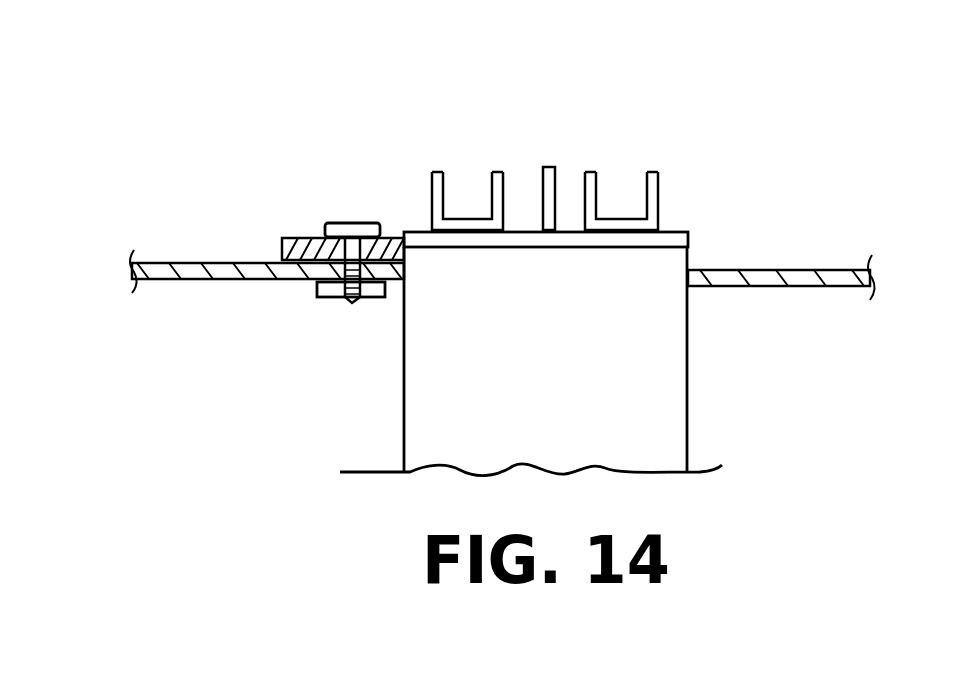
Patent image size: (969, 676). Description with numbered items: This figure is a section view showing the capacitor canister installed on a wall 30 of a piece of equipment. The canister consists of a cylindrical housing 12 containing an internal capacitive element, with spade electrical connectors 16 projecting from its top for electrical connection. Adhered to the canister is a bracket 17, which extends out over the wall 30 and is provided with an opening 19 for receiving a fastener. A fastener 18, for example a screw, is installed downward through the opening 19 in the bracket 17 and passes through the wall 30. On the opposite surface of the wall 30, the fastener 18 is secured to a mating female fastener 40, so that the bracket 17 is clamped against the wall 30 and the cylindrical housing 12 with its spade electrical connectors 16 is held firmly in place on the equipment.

The cylindrical housing 12 is at (667, 428).
The spade electrical connectors 16 is at (497, 173).
The bracket 17 is at (293, 243).
The fastener 18 is at (340, 223).
The opening 19 is at (390, 238).
The wall 30 is at (165, 278).
The female fastener 40 is at (317, 293).